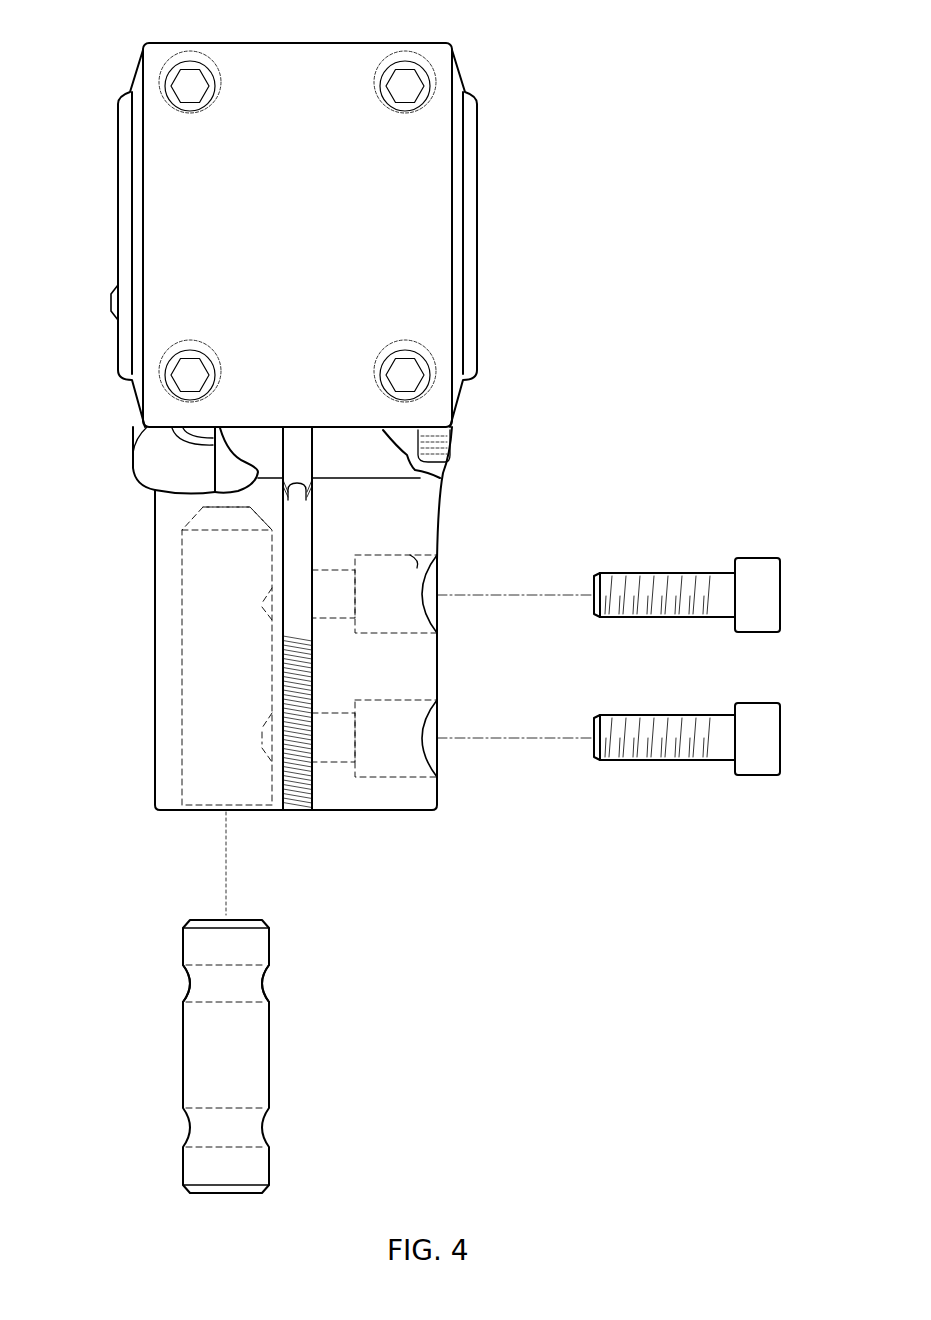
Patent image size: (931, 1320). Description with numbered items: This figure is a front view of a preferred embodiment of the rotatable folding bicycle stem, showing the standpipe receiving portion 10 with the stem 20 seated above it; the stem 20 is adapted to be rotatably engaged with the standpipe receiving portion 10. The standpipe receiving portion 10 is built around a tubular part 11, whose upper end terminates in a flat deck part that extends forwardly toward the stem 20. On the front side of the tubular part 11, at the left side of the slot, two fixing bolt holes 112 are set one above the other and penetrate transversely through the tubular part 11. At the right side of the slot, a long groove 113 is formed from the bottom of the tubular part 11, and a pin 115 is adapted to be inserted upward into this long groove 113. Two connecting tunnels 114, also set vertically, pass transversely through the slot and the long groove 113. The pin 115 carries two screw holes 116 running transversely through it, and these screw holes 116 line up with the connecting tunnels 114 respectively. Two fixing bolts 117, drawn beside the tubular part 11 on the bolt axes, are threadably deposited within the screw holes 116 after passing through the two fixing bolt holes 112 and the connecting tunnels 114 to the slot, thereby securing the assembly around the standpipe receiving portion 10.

The standpipe receiving portion 10 is at (436, 810).
The tubular part 11 is at (172, 658).
The fixing bolt holes 112 is at (437, 569).
The long groove 113 is at (192, 740).
The connecting tunnels 114 is at (275, 570).
The pin 115 is at (252, 1055).
The screw holes 116 is at (246, 968).
The fixing bolts 117 is at (760, 758).
The stem 20 is at (540, 205).